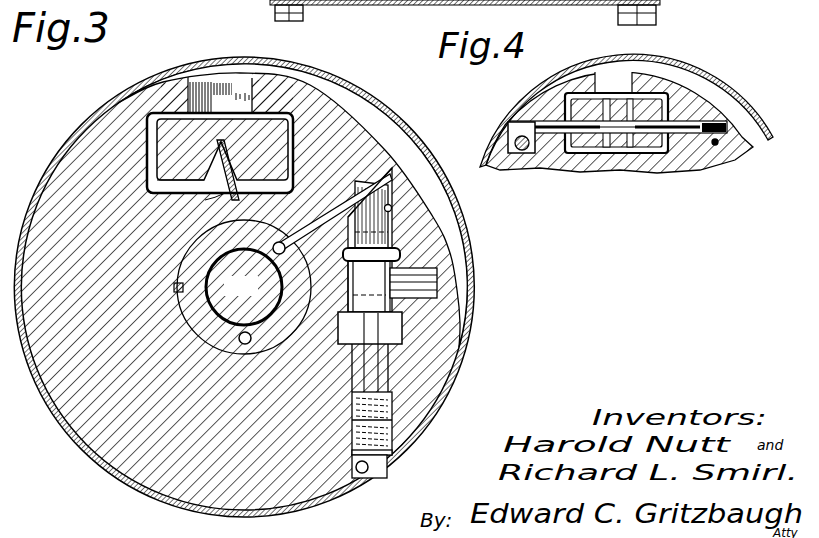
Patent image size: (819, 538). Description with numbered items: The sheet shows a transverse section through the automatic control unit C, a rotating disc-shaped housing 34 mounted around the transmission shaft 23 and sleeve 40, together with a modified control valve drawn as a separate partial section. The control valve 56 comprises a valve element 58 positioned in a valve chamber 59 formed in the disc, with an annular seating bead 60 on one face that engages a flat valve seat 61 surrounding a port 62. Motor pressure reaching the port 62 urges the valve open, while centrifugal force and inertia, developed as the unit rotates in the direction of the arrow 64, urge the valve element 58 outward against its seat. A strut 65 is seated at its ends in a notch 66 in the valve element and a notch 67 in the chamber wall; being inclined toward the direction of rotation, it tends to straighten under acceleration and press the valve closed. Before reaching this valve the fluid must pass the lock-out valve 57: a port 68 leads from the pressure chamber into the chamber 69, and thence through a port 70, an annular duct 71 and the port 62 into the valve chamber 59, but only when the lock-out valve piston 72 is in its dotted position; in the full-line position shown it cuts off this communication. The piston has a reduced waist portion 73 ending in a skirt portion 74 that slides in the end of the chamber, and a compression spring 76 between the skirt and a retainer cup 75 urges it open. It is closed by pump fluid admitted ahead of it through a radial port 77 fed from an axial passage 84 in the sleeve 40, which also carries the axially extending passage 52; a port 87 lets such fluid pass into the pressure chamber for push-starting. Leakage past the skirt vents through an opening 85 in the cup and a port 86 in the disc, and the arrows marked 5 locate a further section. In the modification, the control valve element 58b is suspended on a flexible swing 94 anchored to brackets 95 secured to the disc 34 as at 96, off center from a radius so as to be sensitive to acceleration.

In FIG. 3, the automatic control unit C is at (352, 79).
In FIG. 3, the housing 34 is at (147, 481).
In FIG. 4, the housing 34 is at (683, 160).
In FIG. 3, the annular duct 71 is at (402, 140).
In FIG. 3, the flat valve seat 61 is at (160, 113).
In FIG. 3, the port 62 is at (226, 98).
In FIG. 3, the annular seating bead 60 is at (258, 113).
In FIG. 3, the control valve 56 is at (146, 134).
In FIG. 3, the valve element 58 is at (162, 150).
In FIG. 3, the valve chamber 59 is at (152, 166).
In FIG. 3, the strut 65 is at (232, 201).
In FIG. 3, the notch 66 is at (210, 186).
In FIG. 3, the notch 67 is at (218, 214).
In FIG. 3, the transmission shaft 23 is at (244, 287).
In FIG. 3, the sleeve 40 is at (217, 343).
In FIG. 3, the axially extending passage 52 is at (245, 345).
In FIG. 3, the arrow 64 is at (100, 238).
In FIG. 3, the chamber 69 is at (390, 210).
In FIG. 3, the axial passage 84 is at (309, 222).
In FIG. 3, the radial port 77 is at (326, 206).
In FIG. 3, the port 87 is at (402, 252).
In FIG. 3, the port 70 is at (412, 296).
In FIG. 3, the lock-out valve piston 72 is at (400, 218).
In FIG. 3, the section line 5- 5 is at (328, 241).
In FIG. 3, the port 68 is at (402, 328).
In FIG. 3, the lock-out valve 57 is at (396, 363).
In FIG. 3, the reduced waist portion 73 is at (378, 383).
In FIG. 3, the skirt portion 74 is at (388, 403).
In FIG. 3, the compression spring 76 is at (393, 429).
In FIG. 3, the retainer cup 75 is at (393, 451).
In FIG. 3, the opening 85 is at (388, 470).
In FIG. 3, the port 86 is at (362, 474).
In FIG. 4, the control valve element 58b is at (670, 100).
In FIG. 4, the flexible swing 94 is at (700, 123).
In FIG. 4, the brackets 95 is at (512, 122).
In FIG. 4, the securing point 96 is at (515, 143).